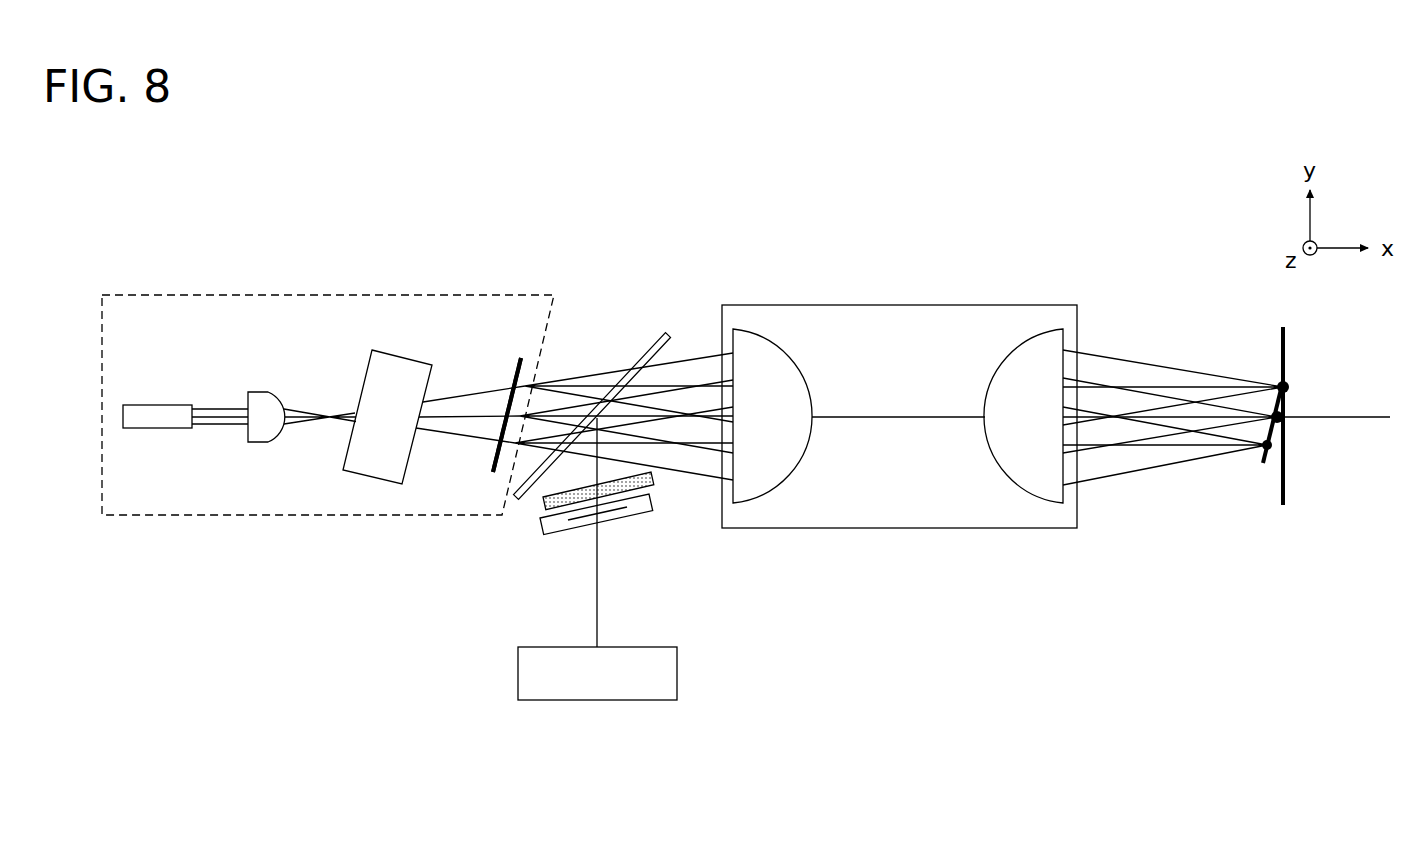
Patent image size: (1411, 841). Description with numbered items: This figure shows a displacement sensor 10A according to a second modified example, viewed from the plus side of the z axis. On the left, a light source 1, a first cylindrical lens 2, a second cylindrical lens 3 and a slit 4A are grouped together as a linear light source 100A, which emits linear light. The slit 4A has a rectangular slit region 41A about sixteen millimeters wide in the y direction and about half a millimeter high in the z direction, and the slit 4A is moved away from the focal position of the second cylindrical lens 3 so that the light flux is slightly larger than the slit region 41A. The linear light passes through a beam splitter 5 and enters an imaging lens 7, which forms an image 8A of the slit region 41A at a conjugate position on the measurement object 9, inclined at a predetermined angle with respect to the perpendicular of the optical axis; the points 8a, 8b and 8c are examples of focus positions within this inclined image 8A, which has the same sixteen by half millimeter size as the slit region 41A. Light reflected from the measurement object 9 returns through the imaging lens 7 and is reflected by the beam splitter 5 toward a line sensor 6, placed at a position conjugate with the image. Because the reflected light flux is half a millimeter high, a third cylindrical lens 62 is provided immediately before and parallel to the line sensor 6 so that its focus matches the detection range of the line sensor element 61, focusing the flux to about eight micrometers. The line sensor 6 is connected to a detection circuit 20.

The light source 1 is at (157, 405).
The first cylindrical lens 2 is at (260, 392).
The second cylindrical lens 3 is at (400, 357).
The slit 4A is at (495, 458).
The slit region 41A is at (517, 370).
The beam splitter 5 is at (651, 345).
The line sensor 6 is at (567, 535).
The line sensor element 61 is at (612, 512).
The third cylindrical lens 62 is at (543, 510).
The imaging lens 7 is at (905, 305).
The focus position 8a is at (1290, 387).
The focus position 8b is at (1288, 421).
The focus position 8c is at (1278, 455).
The image 8A is at (1262, 435).
The measurement object 9 is at (1282, 350).
The displacement sensor 10A is at (1046, 186).
The detection circuit 20 is at (623, 647).
The linear light source 100A is at (424, 295).